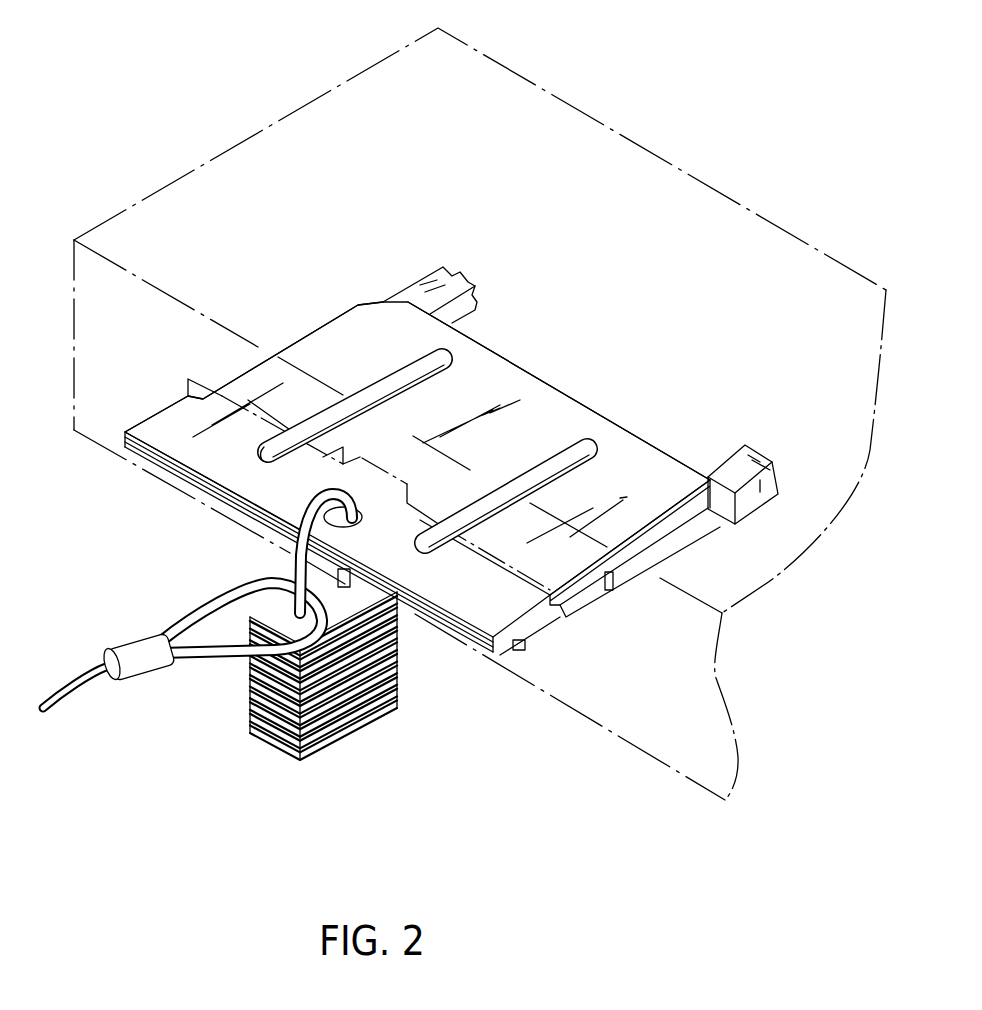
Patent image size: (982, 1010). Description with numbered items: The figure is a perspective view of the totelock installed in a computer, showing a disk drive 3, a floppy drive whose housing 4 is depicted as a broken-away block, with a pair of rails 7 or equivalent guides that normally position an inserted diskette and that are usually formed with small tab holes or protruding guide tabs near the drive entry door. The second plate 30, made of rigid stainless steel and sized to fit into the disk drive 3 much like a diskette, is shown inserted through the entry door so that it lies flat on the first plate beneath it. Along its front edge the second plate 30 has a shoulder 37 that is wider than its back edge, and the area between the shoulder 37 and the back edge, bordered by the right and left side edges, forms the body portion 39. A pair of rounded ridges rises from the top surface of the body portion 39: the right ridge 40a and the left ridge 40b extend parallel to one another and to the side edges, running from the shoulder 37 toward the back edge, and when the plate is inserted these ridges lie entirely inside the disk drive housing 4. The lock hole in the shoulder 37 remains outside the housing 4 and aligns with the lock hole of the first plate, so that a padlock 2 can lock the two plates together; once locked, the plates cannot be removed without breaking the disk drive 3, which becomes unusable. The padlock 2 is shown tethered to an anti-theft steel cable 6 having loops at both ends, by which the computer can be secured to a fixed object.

The padlock 2 is at (342, 742).
The disk drive 3 is at (196, 62).
The disk drive housing 4 is at (160, 198).
The steel cable 6 is at (76, 670).
The rails 7 is at (448, 280).
The second plate 30 is at (362, 322).
The shoulder 37 is at (464, 600).
The body portion 39 is at (516, 441).
The right ridge 40a is at (595, 450).
The left ridge 40b is at (440, 356).